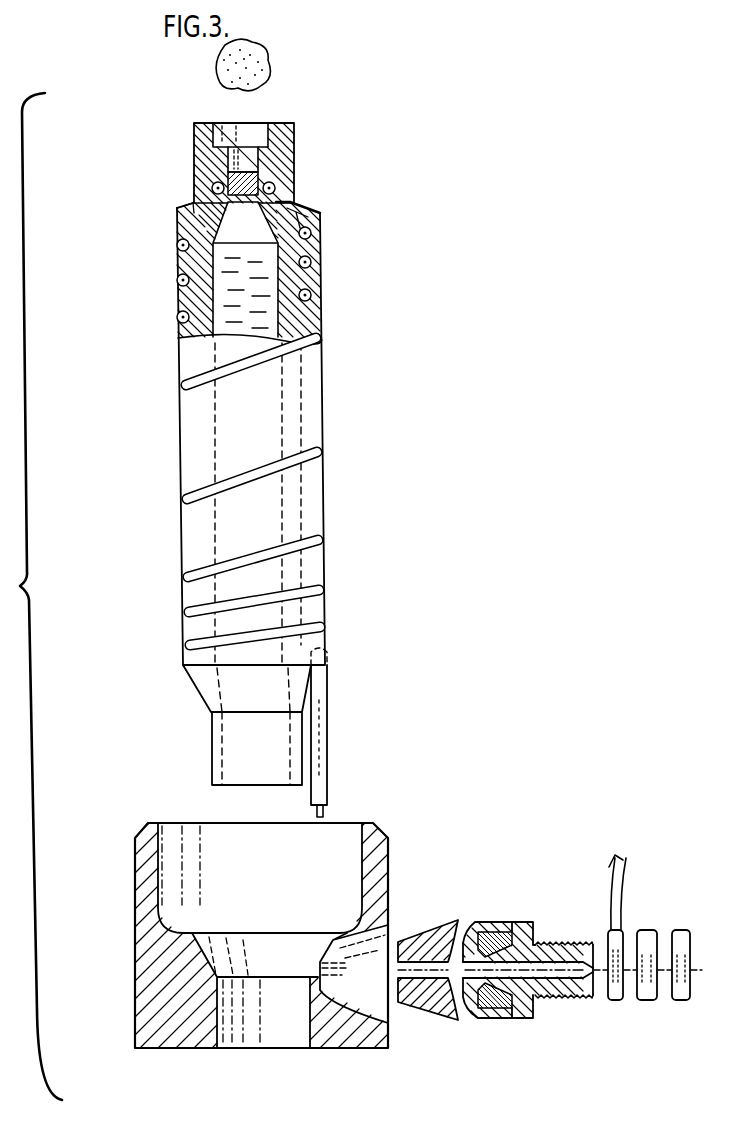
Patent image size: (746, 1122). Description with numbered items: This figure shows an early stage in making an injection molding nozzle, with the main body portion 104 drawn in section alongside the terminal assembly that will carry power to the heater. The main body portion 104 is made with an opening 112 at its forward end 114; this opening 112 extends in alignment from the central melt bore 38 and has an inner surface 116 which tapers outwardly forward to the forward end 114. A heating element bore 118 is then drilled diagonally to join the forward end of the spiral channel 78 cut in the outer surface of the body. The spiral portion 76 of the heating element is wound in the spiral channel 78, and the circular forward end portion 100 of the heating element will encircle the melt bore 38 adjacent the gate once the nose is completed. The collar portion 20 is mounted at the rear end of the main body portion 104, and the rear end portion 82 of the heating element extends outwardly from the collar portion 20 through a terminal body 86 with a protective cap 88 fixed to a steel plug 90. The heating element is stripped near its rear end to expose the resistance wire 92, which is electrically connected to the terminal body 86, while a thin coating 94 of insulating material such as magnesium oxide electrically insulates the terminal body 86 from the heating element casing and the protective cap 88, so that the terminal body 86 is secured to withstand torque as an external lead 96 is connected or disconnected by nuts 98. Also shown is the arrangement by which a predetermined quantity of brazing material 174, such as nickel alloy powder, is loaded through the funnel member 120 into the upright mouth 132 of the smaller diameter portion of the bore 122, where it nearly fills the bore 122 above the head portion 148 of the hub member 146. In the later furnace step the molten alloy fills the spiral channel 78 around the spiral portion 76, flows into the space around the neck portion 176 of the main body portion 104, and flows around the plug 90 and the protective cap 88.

The brazing material 174 is at (266, 52).
The funnel member 120 is at (199, 128).
The upright mouth 132 is at (258, 128).
The head portion 148 is at (196, 158).
The bore 122 is at (253, 155).
The circular forward end portion 100 is at (194, 192).
The inner surface 116 is at (196, 202).
The opening 112 is at (178, 210).
The forward end 114 is at (291, 203).
The heating element bore 118 is at (296, 222).
The hub member 146 is at (321, 247).
The main body portion 104 is at (307, 372).
The melt bore 38 is at (291, 491).
The spiral channel 78 is at (327, 530).
The spiral portion 76 is at (322, 592).
The neck portion 176 is at (232, 735).
The rear end portion 82 is at (327, 780).
The resistance wire 92 is at (324, 815).
The collar portion 20 is at (168, 1033).
The steel plug 90 is at (423, 937).
The protective cap 88 is at (490, 921).
The terminal body 86 is at (520, 922).
The thin coating 94 is at (476, 1017).
The external lead 96 is at (620, 883).
The nuts 98 is at (650, 932).